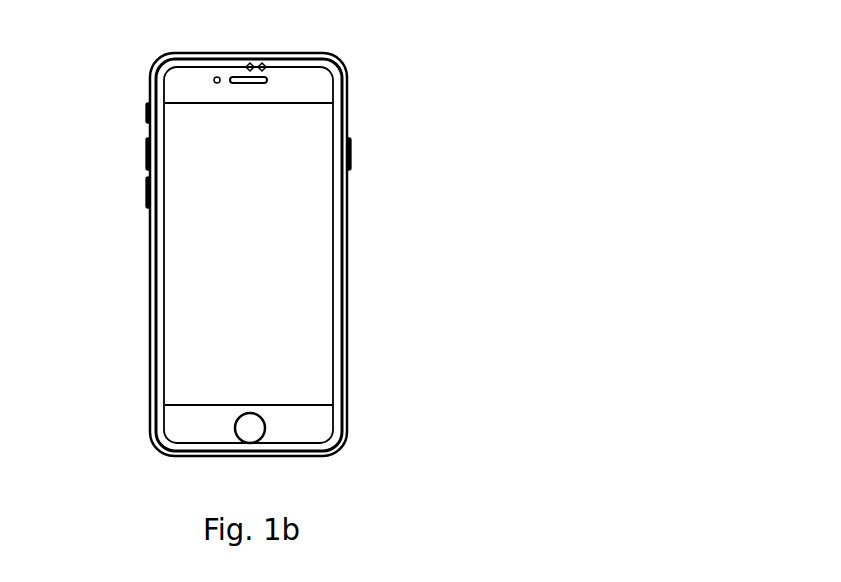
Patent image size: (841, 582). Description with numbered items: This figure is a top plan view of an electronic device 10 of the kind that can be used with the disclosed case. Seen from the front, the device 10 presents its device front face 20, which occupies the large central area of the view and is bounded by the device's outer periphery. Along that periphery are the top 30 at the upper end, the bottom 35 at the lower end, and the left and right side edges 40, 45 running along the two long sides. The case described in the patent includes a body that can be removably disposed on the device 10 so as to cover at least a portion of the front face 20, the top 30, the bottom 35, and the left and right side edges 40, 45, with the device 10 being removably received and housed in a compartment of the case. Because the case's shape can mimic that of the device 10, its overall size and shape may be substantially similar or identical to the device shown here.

The electronic device 10 is at (285, 260).
The device front face 20 is at (263, 267).
The top 30 is at (197, 53).
The bottom 35 is at (322, 452).
The left side edge 40 is at (153, 247).
The right side edge 45 is at (347, 227).